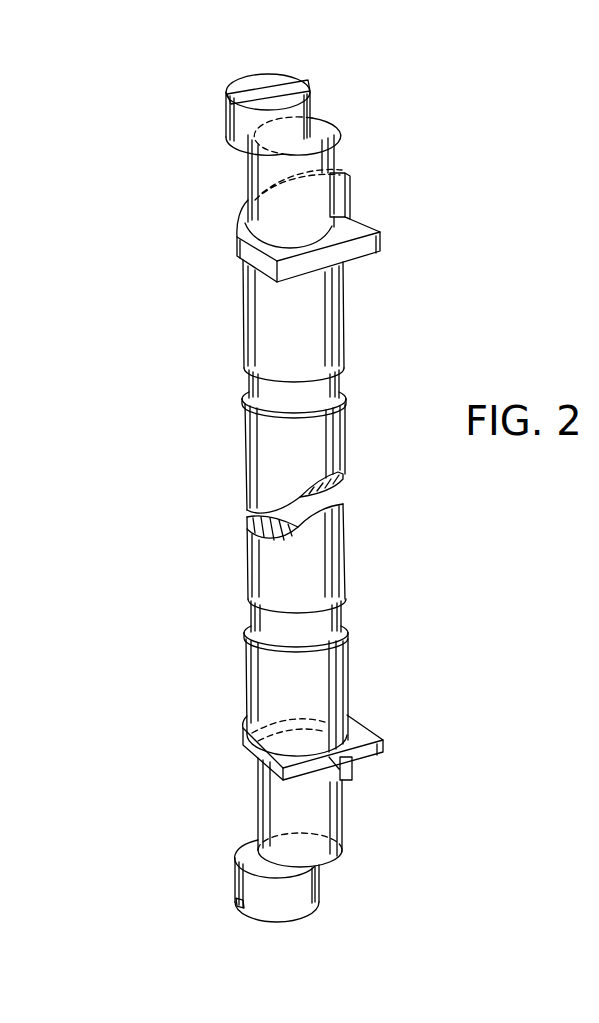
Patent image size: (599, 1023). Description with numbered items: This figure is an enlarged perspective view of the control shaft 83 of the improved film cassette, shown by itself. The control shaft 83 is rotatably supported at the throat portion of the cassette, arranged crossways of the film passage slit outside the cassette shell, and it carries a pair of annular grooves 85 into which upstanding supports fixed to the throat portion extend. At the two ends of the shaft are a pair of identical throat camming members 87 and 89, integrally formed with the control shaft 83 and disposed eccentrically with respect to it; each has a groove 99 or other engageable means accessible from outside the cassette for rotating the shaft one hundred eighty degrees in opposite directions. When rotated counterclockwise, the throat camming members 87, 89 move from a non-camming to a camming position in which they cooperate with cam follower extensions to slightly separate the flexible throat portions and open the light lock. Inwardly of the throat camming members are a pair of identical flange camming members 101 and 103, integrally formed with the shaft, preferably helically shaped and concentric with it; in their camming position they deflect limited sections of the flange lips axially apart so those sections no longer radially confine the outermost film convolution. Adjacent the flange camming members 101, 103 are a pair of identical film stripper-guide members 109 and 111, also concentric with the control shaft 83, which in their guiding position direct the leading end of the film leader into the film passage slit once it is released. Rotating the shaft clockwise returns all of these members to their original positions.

The control shaft 83 is at (226, 428).
The annular grooves 85 is at (267, 380).
The throat camming member 87 is at (238, 78).
The throat camming member 89 is at (305, 916).
The grooves 99 is at (290, 80).
The flange camming member 101 is at (347, 201).
The flange camming member 103 is at (350, 767).
The film stripper-guide member 109 is at (368, 249).
The film stripper-guide member 111 is at (372, 750).